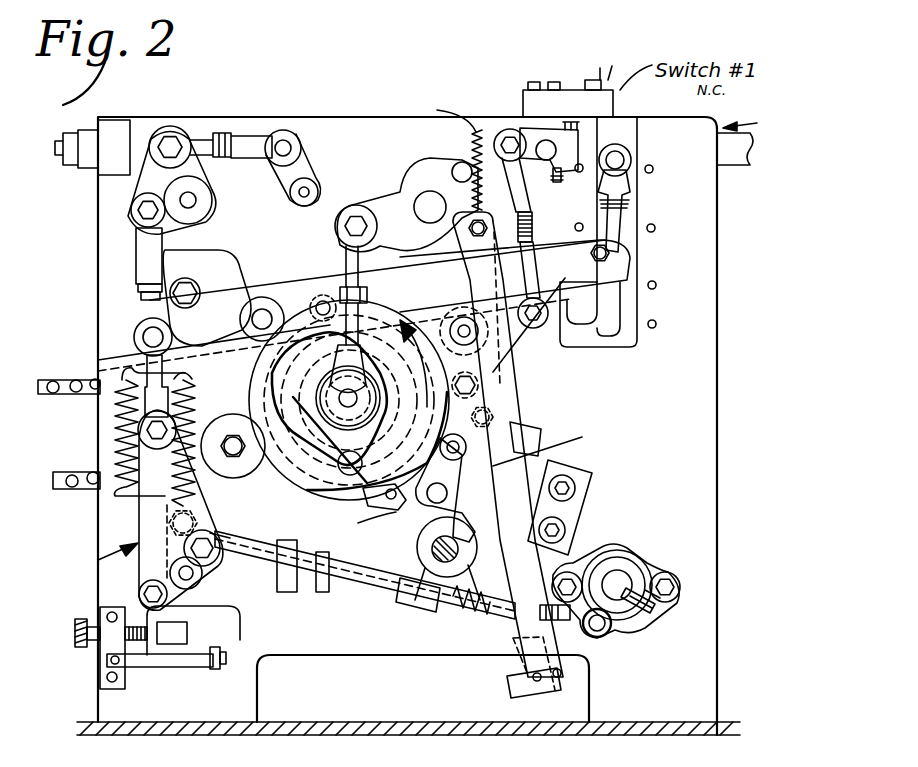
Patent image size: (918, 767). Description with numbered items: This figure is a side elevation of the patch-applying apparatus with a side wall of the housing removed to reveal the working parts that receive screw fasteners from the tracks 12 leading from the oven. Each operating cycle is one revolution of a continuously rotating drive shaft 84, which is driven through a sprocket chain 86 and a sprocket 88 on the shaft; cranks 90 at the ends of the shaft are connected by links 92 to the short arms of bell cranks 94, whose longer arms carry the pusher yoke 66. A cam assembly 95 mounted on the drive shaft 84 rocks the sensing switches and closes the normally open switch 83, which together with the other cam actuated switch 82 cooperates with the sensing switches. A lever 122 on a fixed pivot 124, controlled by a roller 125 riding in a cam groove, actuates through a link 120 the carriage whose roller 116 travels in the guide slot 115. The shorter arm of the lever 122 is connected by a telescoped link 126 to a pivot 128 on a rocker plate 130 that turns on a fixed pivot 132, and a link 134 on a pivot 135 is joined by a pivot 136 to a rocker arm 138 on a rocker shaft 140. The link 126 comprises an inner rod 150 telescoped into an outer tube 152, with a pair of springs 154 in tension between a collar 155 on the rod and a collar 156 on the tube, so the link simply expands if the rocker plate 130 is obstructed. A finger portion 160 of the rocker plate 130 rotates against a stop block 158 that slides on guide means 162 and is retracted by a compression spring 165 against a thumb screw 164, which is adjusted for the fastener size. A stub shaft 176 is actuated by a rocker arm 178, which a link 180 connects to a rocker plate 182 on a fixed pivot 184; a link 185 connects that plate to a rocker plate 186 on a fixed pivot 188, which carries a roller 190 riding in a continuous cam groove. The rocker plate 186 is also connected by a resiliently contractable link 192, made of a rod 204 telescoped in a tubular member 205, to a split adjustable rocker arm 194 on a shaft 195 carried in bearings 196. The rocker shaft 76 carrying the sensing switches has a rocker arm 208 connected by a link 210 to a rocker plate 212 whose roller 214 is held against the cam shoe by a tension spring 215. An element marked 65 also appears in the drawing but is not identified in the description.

The track 12 is at (738, 166).
The slide bar 65 is at (517, 664).
The pusher yoke 66 is at (562, 692).
The rocker shaft 76 is at (522, 135).
The cam actuated switch 82 is at (400, 512).
The normally open switch 83 is at (472, 470).
The drive shaft 84 is at (349, 400).
The sprocket chain 86 is at (82, 480).
The sprocket 88 is at (329, 407).
The crank 90 is at (345, 398).
The link 92 is at (344, 262).
The bell crank 94 is at (402, 190).
The cam assembly 95 is at (255, 360).
The guide slot 115 is at (615, 292).
The roller 116 is at (628, 200).
The link 120 is at (617, 222).
The lever 122 is at (536, 328).
The fixed pivot 124 is at (262, 316).
The roller 125 is at (318, 303).
The link 126 is at (184, 574).
The pivot 128 is at (150, 640).
The rocker plate 130 is at (160, 580).
The fixed pivot 132 is at (213, 547).
The link 134 is at (212, 530).
The pivot 135 is at (188, 512).
The pivot 136 is at (405, 603).
The rocker arm 138 is at (452, 562).
The rocker shaft 140 is at (458, 543).
The inner rod 150 is at (147, 364).
The outer tube 152 is at (157, 556).
The spring 154 is at (117, 432).
The collar 155 is at (110, 370).
The collar 156 is at (150, 522).
The stop block 158 is at (180, 633).
The finger portion 160 is at (236, 602).
The guide means 162 is at (166, 668).
The thumb screw 164 is at (81, 648).
The compression spring 165 is at (204, 669).
The stub shaft 176 is at (312, 190).
The rocker arm 178 is at (300, 168).
The link 180 is at (250, 140).
The rocker plate 182 is at (150, 182).
The fixed pivot 184 is at (196, 200).
The link 185 is at (136, 256).
The rocker plate 186 is at (186, 418).
The fixed pivot 188 is at (237, 455).
The roller 190 is at (350, 503).
The link 192 is at (335, 596).
The rocker arm 194 is at (634, 622).
The shaft 195 is at (619, 580).
The bearings 196 is at (610, 560).
The rod 204 is at (292, 592).
The tubular member 205 is at (493, 610).
The rocker arm 208 is at (540, 176).
The link 210 is at (535, 215).
The rocker plate 212 is at (512, 345).
The roller 214 is at (496, 407).
The tension spring 215 is at (453, 147).